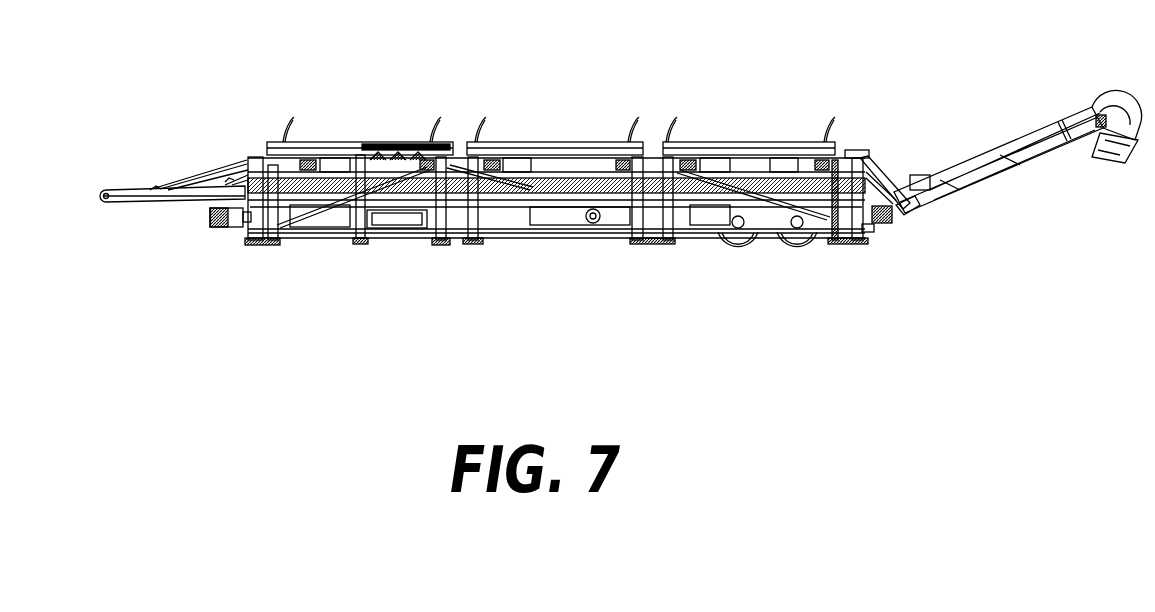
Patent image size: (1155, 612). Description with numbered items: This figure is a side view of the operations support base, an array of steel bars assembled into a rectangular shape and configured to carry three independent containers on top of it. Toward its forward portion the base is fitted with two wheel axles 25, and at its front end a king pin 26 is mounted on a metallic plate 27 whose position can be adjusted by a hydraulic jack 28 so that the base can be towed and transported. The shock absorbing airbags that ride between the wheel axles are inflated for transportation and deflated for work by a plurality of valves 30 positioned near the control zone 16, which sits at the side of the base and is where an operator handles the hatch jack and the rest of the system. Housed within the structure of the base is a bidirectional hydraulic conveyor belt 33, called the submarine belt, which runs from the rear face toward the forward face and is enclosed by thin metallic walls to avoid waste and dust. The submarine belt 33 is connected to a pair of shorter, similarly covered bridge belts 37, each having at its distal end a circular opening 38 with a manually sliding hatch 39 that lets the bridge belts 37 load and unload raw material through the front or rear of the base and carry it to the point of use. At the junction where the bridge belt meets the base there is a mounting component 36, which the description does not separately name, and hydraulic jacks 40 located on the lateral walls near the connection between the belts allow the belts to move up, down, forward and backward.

The control zone 16 is at (367, 240).
The wheel axles 25 is at (750, 247).
The king pin 26 is at (122, 203).
The metallic plate 27 is at (160, 186).
The hydraulic jack 28 is at (236, 178).
The valves 30 is at (442, 243).
The hydraulic conveyor belt (submarine belt) 33 is at (742, 145).
The conveyor mount 36 is at (910, 218).
The bridge belts 37 is at (995, 182).
The circular opening 38 is at (1110, 97).
The hatch 39 is at (1093, 165).
The hydraulic jacks 40 is at (866, 155).